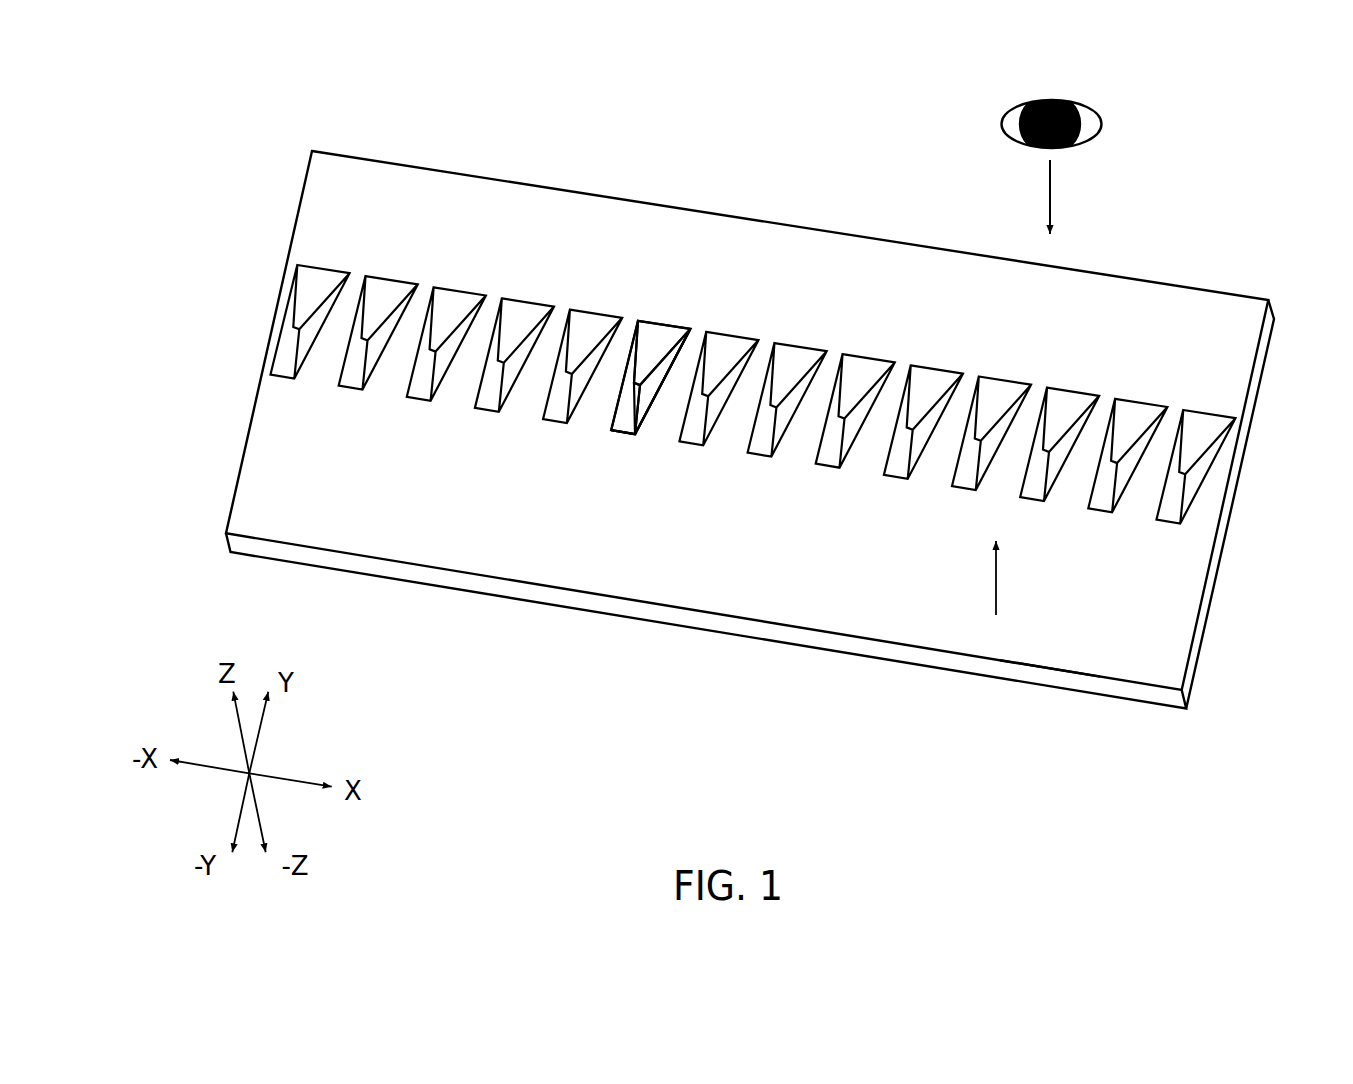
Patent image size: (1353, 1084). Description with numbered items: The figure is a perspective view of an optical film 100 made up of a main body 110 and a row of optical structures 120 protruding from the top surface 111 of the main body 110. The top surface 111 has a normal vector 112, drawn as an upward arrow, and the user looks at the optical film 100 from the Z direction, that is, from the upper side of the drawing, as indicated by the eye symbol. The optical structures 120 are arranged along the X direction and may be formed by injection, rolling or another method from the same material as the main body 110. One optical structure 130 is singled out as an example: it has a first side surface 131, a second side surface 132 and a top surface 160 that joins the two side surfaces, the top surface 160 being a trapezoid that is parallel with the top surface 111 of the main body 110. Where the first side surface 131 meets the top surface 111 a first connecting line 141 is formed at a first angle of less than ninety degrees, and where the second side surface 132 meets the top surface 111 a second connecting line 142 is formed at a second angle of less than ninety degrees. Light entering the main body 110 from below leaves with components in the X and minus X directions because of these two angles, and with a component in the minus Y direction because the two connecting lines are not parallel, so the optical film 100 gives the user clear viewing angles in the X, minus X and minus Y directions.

The optical film 100 is at (877, 132).
The main body 110 is at (1157, 708).
The top surface 111 is at (1057, 640).
The normal vector 112 is at (993, 585).
The optical structures 120 is at (753, 398).
The optical structure 130 is at (665, 322).
The first side surface 131 is at (680, 362).
The second side surface 132 is at (628, 362).
The first connecting line 141 is at (662, 403).
The second connecting line 142 is at (612, 422).
The top surface 160 is at (653, 368).